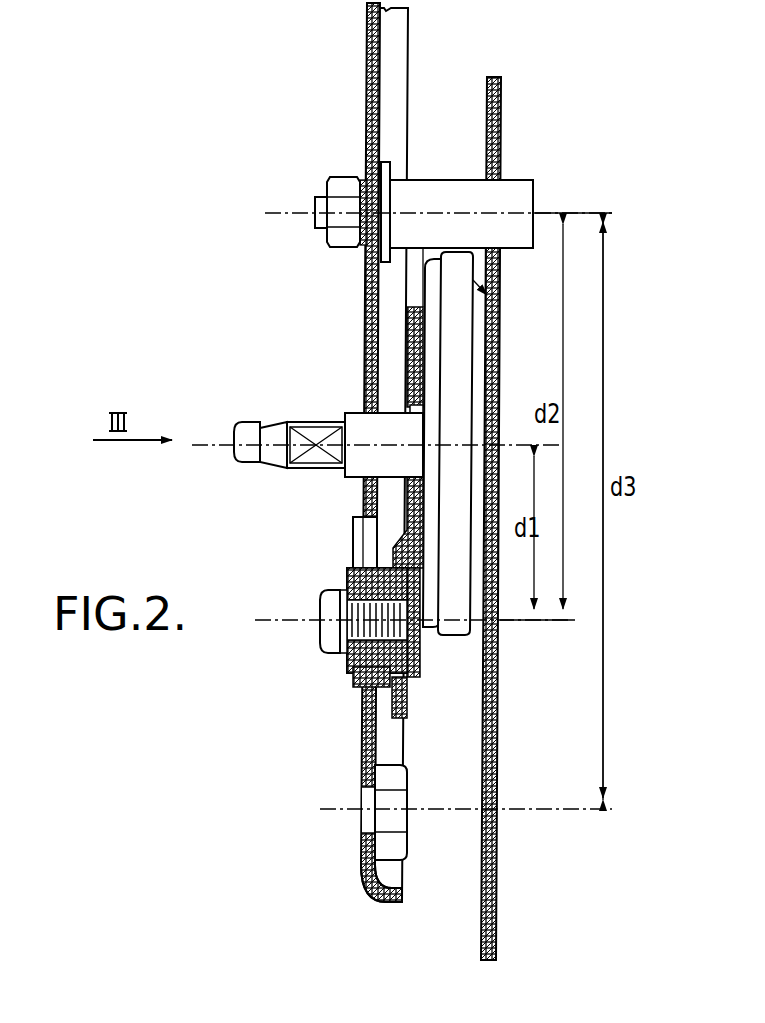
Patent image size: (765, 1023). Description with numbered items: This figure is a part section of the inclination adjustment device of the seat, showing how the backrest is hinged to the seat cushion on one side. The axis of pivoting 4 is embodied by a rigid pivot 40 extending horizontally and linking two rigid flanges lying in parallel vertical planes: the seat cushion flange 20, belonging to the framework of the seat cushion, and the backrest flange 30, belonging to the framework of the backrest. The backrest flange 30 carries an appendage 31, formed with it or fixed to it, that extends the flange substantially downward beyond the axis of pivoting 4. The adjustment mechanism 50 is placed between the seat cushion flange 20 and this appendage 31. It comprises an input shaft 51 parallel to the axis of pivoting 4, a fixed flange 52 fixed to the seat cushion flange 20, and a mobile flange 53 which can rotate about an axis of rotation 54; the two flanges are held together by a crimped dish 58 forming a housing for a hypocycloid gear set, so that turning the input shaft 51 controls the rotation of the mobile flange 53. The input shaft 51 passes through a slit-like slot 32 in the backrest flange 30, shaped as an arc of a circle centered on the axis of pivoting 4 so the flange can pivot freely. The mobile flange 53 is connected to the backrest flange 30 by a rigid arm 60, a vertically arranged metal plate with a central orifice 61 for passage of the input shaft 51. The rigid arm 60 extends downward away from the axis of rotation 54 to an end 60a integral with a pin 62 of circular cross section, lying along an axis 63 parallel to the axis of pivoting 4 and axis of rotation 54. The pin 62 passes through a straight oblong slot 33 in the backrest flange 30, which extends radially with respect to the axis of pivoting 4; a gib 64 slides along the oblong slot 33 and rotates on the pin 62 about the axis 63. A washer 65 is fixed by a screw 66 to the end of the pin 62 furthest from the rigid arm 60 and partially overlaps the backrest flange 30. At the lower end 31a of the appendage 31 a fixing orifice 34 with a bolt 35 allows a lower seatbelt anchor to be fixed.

The axis of pivoting 4 is at (295, 210).
The seat cushion flange 20 is at (502, 95).
The backrest flange 30 is at (370, 47).
The appendage 31 is at (363, 285).
The lower end of the appendage 31a is at (362, 868).
The slit-like slot 32 is at (370, 422).
The oblong slot 33 is at (360, 548).
The fixing orifice 34 is at (367, 790).
The bolt 35 is at (388, 818).
The rigid pivot 40 is at (487, 203).
The adjustment mechanism 50 is at (447, 335).
The input shaft 51 is at (297, 472).
The fixed flange 52 is at (478, 585).
The mobile flange 53 is at (452, 580).
The axis of rotation 54 is at (215, 438).
The crimped dish 58 is at (481, 665).
The rigid arm 60 is at (407, 343).
The end of the arm 60a is at (407, 710).
The central orifice 61 is at (423, 407).
The pin 62 is at (367, 643).
The axis of the pin 63 is at (290, 620).
The gib 64 is at (358, 678).
The washer 65 is at (347, 580).
The screw 66 is at (332, 627).